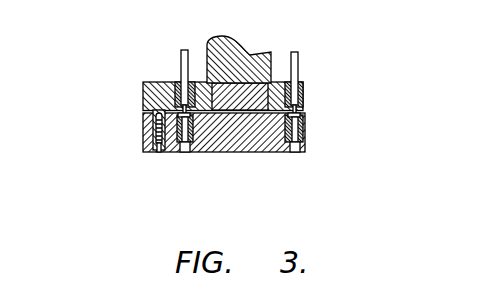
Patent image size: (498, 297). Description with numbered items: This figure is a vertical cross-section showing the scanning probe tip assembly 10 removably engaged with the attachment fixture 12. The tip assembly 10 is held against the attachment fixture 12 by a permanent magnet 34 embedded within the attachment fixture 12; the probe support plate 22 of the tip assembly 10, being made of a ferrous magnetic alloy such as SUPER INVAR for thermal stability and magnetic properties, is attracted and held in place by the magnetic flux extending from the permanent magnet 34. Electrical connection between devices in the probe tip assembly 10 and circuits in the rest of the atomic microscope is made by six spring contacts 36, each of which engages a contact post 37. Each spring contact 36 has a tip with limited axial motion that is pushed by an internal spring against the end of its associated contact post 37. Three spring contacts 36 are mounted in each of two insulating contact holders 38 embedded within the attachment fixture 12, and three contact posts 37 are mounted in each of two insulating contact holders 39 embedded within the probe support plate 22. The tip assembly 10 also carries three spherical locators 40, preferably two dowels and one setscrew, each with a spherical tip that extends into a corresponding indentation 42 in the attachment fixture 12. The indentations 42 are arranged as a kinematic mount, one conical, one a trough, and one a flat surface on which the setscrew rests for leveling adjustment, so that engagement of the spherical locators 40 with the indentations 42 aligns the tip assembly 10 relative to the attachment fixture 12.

The scanning probe tip assembly 10 is at (213, 101).
The attachment fixture 12 is at (126, 92).
The probe support plate 22 is at (268, 153).
The permanent magnet 34 is at (245, 83).
The spring contact 36 is at (180, 68).
The contact post 37 is at (184, 153).
The insulating contact holder 38 is at (300, 103).
The insulating contact holder 39 is at (300, 137).
The spherical locator 40 is at (158, 153).
The indentation 42 is at (153, 121).